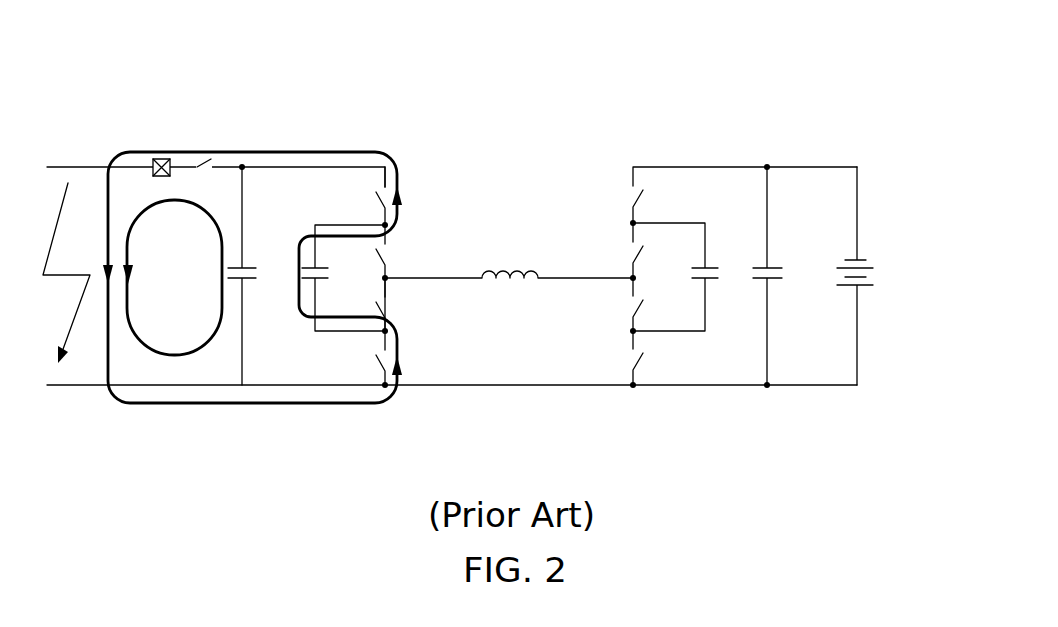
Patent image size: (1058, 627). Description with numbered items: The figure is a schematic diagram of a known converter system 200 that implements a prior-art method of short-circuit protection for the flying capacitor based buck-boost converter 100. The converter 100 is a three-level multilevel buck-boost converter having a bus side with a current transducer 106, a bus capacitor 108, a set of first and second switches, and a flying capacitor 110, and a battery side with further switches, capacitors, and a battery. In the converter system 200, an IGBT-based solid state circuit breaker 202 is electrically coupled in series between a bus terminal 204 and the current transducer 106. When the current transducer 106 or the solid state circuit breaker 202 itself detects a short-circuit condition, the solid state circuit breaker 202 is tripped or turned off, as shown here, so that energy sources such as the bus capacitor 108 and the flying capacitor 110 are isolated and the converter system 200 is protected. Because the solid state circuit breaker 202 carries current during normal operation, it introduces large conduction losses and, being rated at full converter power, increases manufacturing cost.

The converter system 200 is at (148, 77).
The buck-boost converter 100 is at (102, 416).
The current transducer 106 is at (158, 156).
The solid state circuit breaker 202 is at (203, 157).
The bus terminal 204 is at (247, 163).
The bus capacitor 108 is at (228, 266).
The flying capacitor 110 is at (298, 264).